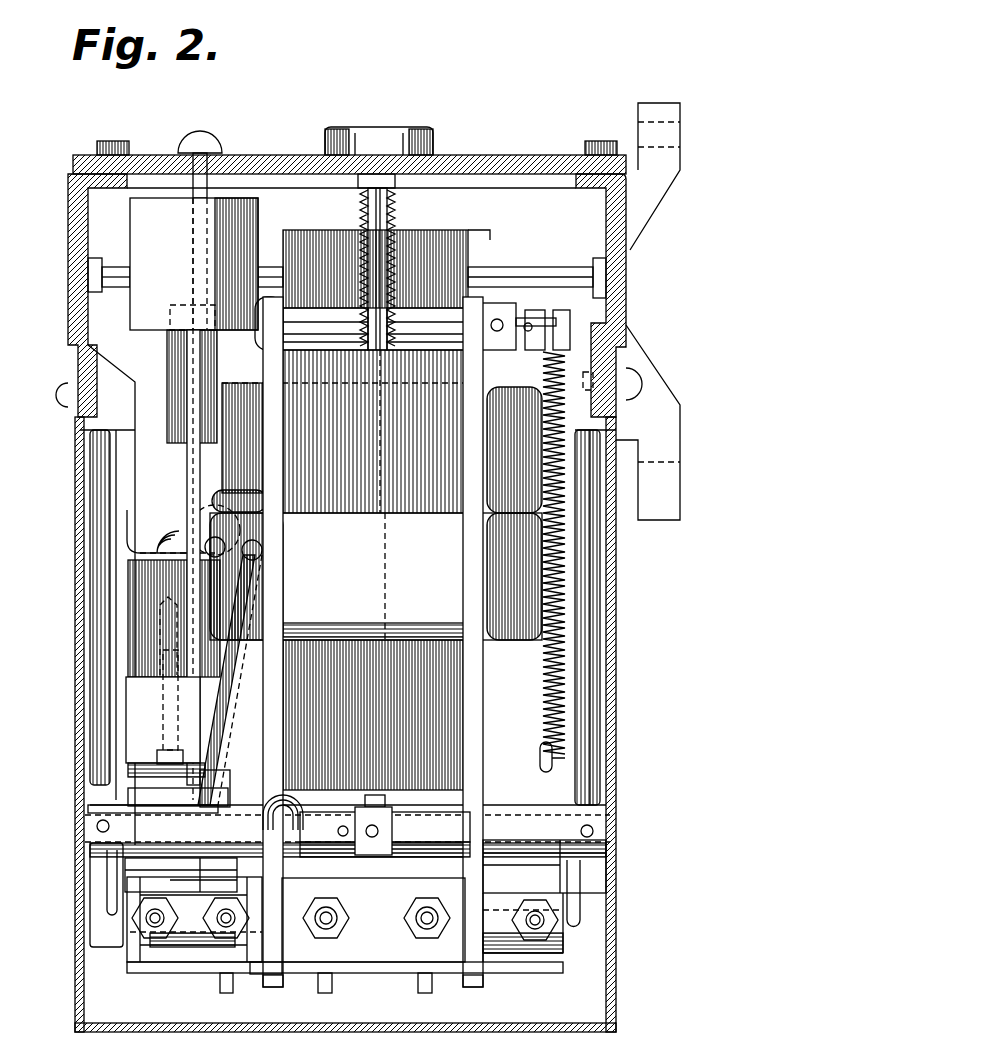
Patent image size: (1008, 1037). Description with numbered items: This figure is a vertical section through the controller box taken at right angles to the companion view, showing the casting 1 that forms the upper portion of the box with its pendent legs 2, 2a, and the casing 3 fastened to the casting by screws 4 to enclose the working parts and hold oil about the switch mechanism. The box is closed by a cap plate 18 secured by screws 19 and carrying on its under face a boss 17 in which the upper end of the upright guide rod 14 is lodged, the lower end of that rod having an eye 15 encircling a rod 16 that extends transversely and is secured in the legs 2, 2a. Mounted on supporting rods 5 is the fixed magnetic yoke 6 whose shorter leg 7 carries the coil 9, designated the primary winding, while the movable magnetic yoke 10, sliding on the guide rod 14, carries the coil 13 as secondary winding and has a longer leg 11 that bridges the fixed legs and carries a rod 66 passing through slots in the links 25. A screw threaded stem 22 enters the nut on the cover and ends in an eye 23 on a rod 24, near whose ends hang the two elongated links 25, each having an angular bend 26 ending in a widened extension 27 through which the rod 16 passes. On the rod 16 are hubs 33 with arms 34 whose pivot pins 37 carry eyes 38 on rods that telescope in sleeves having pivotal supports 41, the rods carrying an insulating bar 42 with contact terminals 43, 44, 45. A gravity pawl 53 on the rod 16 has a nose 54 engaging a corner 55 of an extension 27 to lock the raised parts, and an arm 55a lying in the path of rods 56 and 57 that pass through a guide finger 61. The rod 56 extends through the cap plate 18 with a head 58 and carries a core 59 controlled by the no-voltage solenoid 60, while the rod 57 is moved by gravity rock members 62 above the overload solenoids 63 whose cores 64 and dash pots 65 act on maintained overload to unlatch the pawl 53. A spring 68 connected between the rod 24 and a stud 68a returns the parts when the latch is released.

The casting 1 is at (68, 323).
The leg 2 is at (105, 714).
The leg 2a is at (600, 700).
The casing 3 is at (75, 622).
The screw 4 is at (66, 407).
The supporting rod 5 is at (567, 268).
The magnetic yoke 6 is at (466, 234).
The leg 7 is at (420, 252).
The coil 9 is at (345, 438).
The magnetic yoke 10 is at (412, 431).
The leg 11 is at (628, 410).
The coil 13 is at (376, 576).
The guide rod 14 is at (370, 222).
The eye 15 is at (392, 820).
The rod 16 is at (433, 830).
The boss 17 is at (400, 184).
The cap plate 18 is at (500, 166).
The screw 19 is at (112, 141).
The screw threaded stem 22 is at (360, 204).
The eye 23 is at (366, 322).
The rod 24 is at (427, 329).
The link 25 is at (268, 360).
The angular bend 26 is at (282, 755).
The extension 27 is at (272, 990).
The hub 33 is at (115, 836).
The arm 34 is at (365, 866).
The pivot pin 37 is at (192, 935).
The eye 38 is at (168, 942).
The pivotal support 41 is at (108, 938).
The bar 42 is at (380, 974).
The contact terminal 43 is at (226, 993).
The contact terminal 44 is at (325, 993).
The contact terminal 45 is at (425, 993).
The gravity pawl 53 is at (283, 819).
The nose 54 is at (275, 865).
The corner 55 is at (280, 977).
The arm 55a is at (233, 790).
The rod 56 is at (188, 486).
The rod 57 is at (230, 700).
The head 58 is at (203, 134).
The core 59 is at (170, 372).
The solenoid 60 is at (194, 264).
The guide finger 61 is at (128, 812).
The gravity rock member 62 is at (178, 537).
The solenoid 63 is at (174, 618).
The core 64 is at (168, 727).
The dash pot 65 is at (172, 777).
The rod 66 is at (266, 490).
The spring 68 is at (543, 673).
The stud 68a is at (541, 762).